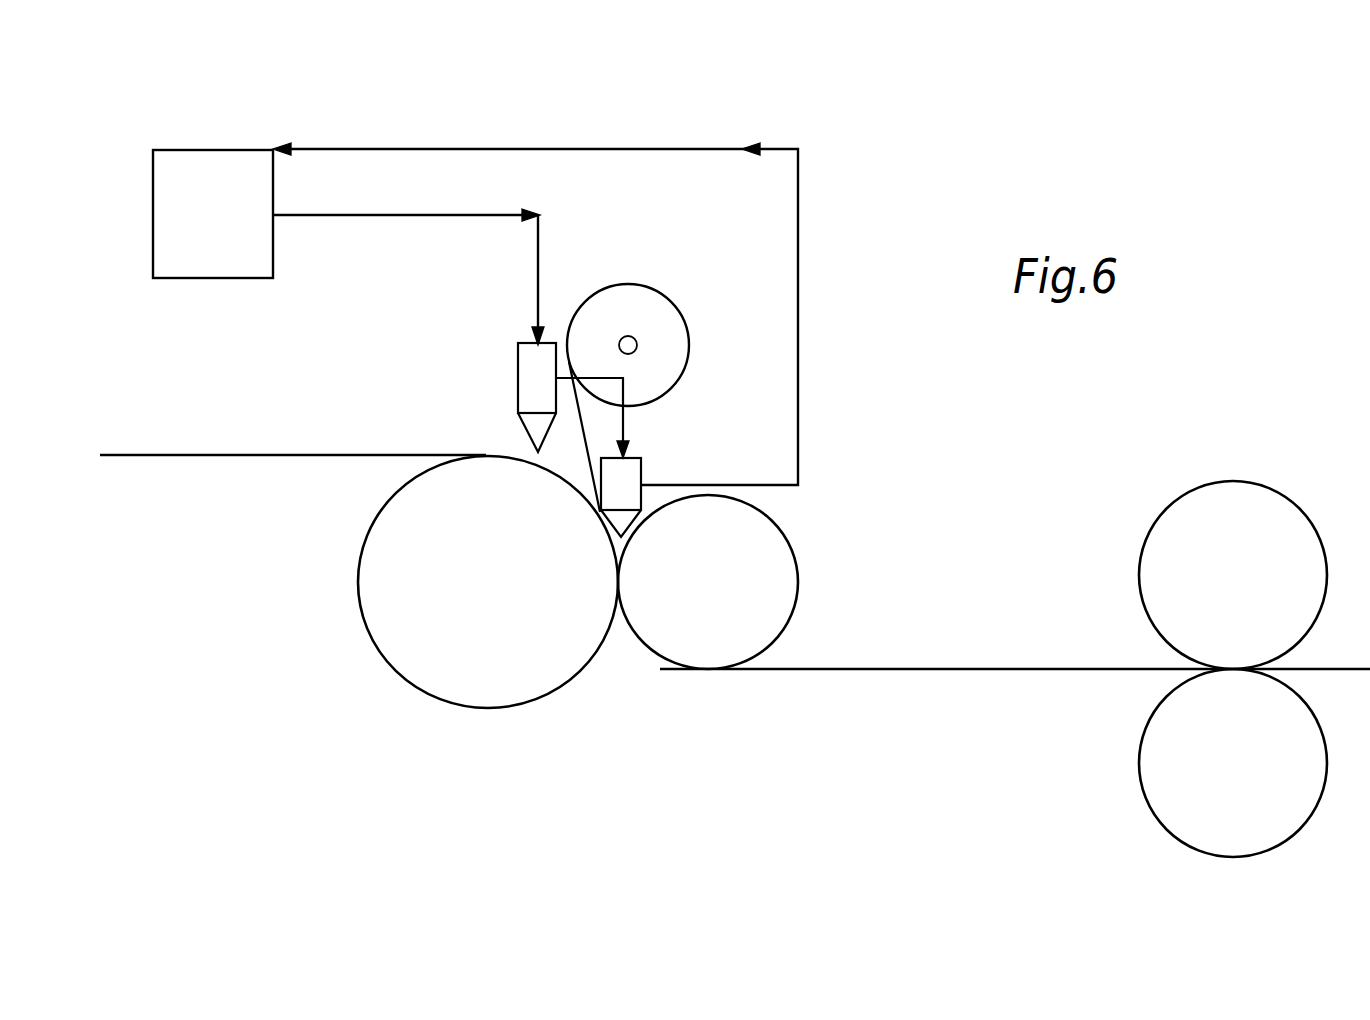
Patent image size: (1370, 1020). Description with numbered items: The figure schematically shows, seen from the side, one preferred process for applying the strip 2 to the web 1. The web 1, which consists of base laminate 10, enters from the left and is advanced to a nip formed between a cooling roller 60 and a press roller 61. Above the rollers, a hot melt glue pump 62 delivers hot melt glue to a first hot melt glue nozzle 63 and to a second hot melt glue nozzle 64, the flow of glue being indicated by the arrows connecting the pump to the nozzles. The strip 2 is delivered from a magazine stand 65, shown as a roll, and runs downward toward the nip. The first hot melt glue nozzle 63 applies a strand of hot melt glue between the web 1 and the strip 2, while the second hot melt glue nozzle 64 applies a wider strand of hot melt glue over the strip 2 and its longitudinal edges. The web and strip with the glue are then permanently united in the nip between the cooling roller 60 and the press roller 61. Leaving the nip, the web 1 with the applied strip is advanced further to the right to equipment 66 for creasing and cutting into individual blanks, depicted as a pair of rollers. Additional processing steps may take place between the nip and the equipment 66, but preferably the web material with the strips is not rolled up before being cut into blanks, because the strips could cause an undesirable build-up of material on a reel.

The web 1 is at (293, 422).
The base laminate 10 is at (178, 455).
The strip 2 is at (585, 433).
The cooling roller 60 is at (358, 582).
The press roller 61 is at (673, 668).
The hot melt glue pump 62 is at (188, 150).
The first hot melt glue nozzle 63 is at (518, 385).
The second hot melt glue nozzle 64 is at (641, 476).
The magazine stand 65 is at (687, 327).
The equipment for creasing and cutting 66 is at (1243, 482).